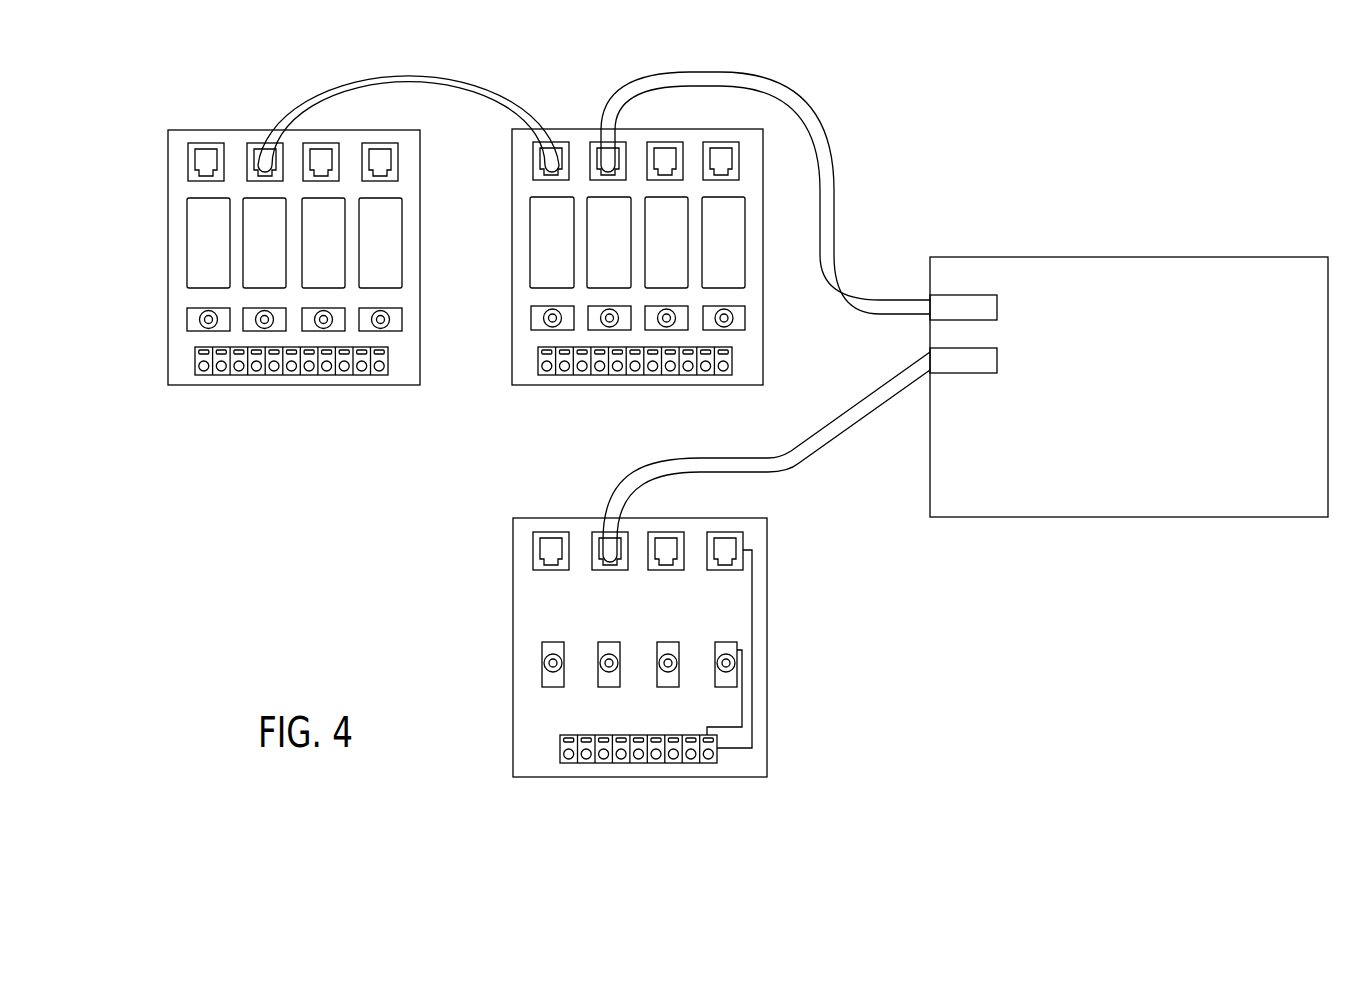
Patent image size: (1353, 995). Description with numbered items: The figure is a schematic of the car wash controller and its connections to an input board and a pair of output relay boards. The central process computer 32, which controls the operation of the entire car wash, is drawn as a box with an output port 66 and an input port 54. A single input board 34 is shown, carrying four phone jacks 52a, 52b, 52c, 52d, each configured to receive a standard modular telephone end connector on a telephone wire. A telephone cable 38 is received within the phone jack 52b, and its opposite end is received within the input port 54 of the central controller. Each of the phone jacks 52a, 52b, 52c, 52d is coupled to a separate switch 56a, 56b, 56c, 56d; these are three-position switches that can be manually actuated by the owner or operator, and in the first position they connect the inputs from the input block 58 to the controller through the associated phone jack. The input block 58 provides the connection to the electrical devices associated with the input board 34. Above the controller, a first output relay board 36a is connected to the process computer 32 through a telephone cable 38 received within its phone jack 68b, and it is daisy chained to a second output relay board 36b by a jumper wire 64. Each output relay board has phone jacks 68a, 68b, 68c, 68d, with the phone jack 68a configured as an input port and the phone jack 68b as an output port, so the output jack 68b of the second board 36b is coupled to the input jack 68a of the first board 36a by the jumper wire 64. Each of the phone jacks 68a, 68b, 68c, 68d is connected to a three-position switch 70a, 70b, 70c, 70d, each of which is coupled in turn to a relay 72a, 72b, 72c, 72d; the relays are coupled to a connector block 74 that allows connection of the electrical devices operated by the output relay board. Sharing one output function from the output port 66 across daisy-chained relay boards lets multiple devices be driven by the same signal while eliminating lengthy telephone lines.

The central process computer 32 is at (1145, 257).
The input board 34 is at (792, 683).
The first output relay board 36a is at (506, 294).
The second output relay board 36b is at (166, 315).
The telephone cable 38 is at (835, 170).
The phone jack 52a is at (538, 530).
The phone jack 52b is at (597, 530).
The phone jack 52c is at (660, 530).
The phone jack 52d is at (740, 527).
The input port 54 is at (972, 375).
The switch 56a is at (542, 642).
The switch 56b is at (598, 642).
The switch 56c is at (656, 642).
The switch 56d is at (722, 688).
The input block 58 is at (648, 765).
The jumper wire 64 is at (457, 63).
The output port 66 is at (997, 296).
The phone jack 68a is at (206, 143).
The phone jack 68b is at (253, 143).
The phone jack 68c is at (310, 143).
The phone jack 68d is at (370, 143).
The switch 70a is at (530, 323).
The switch 70b is at (587, 330).
The switch 70c is at (680, 306).
The switch 70d is at (747, 318).
The relay 72a is at (530, 244).
The relay 72b is at (607, 196).
The relay 72c is at (680, 194).
The relay 72d is at (747, 237).
The connector block 74 is at (292, 376).